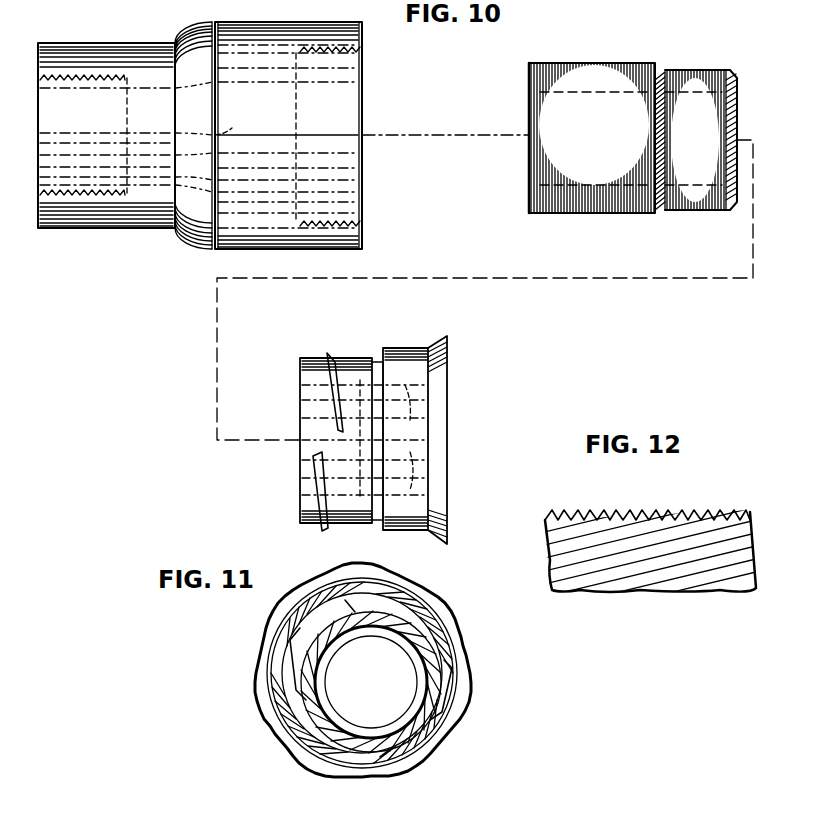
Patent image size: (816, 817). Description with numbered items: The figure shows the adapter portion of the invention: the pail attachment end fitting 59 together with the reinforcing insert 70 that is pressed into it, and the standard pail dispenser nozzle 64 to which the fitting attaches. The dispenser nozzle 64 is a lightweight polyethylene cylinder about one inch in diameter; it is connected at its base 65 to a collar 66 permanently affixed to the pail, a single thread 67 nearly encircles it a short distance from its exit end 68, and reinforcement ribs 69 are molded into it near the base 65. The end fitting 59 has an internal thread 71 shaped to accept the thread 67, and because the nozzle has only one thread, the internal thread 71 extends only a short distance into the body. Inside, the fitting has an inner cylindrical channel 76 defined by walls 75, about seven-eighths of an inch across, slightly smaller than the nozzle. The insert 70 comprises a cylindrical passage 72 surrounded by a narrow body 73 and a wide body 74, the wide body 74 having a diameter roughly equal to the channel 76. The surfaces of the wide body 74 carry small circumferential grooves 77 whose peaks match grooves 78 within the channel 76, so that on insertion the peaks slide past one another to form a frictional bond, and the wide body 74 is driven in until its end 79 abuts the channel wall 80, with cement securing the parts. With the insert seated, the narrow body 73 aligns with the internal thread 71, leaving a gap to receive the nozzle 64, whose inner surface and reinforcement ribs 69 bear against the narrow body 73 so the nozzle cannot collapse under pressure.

In FIG. 10, the pail attachment end fitting 59 is at (221, 135).
In FIG. 10, the pail dispenser nozzle 64 is at (431, 344).
In FIG. 11, the pail dispenser nozzle 64 is at (310, 590).
In FIG. 10, the base 65 is at (428, 380).
In FIG. 10, the collar 66 is at (368, 423).
In FIG. 11, the collar 66 is at (434, 612).
In FIG. 10, the thread 67 is at (334, 358).
In FIG. 10, the exit end 68 is at (300, 479).
In FIG. 10, the reinforcement ribs 69 is at (432, 441).
In FIG. 11, the reinforcement ribs 69 is at (272, 665).
In FIG. 10, the insert 70 is at (605, 139).
In FIG. 11, the insert 70 is at (330, 652).
In FIG. 12, the insert 70 is at (545, 518).
In FIG. 10, the internal thread 71 is at (364, 53).
In FIG. 10, the cylindrical passage 72 is at (580, 96).
In FIG. 11, the cylindrical passage 72 is at (395, 720).
In FIG. 10, the narrow body 73 is at (722, 68).
In FIG. 11, the narrow body 73 is at (288, 742).
In FIG. 10, the wide body 74 is at (577, 62).
In FIG. 10, the walls 75 is at (286, 56).
In FIG. 10, the inner cylindrical channel 76 is at (287, 135).
In FIG. 10, the circumferential grooves 77 is at (636, 204).
In FIG. 11, the circumferential grooves 77 is at (430, 673).
In FIG. 12, the circumferential grooves 77 is at (616, 515).
In FIG. 10, the grooves 78 is at (205, 246).
In FIG. 10, the end face 79 is at (529, 192).
In FIG. 10, the channel wall 80 is at (224, 136).